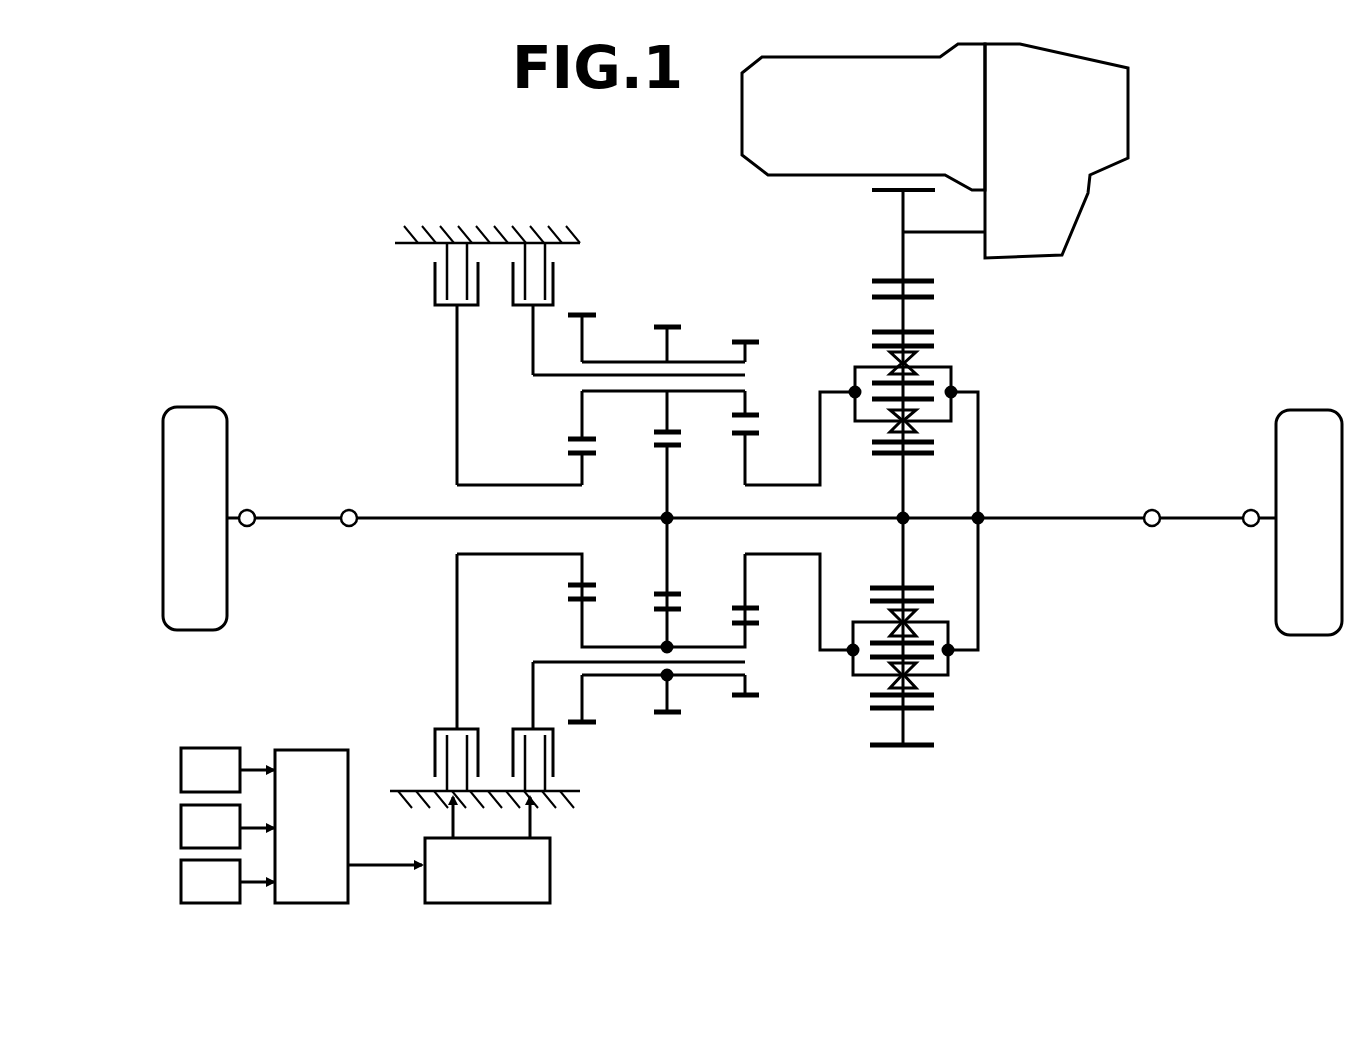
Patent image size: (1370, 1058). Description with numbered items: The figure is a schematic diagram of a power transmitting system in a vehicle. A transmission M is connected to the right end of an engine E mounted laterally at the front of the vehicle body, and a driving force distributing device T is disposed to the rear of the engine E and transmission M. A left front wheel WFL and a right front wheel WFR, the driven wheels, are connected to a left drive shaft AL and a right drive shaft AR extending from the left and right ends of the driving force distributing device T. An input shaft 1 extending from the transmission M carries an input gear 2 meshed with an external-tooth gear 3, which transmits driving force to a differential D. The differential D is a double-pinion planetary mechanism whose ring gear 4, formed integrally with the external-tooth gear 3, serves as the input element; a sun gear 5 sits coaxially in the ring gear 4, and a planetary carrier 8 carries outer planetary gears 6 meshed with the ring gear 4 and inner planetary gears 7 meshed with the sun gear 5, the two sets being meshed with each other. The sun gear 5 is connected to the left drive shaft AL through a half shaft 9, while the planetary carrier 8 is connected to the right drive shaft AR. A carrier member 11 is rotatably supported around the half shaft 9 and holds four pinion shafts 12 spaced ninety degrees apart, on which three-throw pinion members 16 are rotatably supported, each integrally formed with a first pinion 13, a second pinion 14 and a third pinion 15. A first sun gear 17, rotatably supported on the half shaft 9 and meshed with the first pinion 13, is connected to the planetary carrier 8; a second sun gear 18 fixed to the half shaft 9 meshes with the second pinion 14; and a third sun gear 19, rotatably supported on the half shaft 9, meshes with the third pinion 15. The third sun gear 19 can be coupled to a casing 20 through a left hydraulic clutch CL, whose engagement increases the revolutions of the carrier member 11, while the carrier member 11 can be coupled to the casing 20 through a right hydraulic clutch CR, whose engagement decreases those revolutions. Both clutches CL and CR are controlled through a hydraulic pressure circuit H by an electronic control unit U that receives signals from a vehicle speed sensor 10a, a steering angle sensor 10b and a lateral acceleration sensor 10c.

The input shaft 1 is at (930, 236).
The input gear 2 is at (896, 193).
The external-tooth gear 3 is at (934, 297).
The ring gear 4 is at (934, 332).
The sun gear 5 is at (934, 453).
The outer planetary gears 6 is at (872, 346).
The inner planetary gears 7 is at (872, 443).
The planetary carrier 8 is at (820, 578).
The half shaft 9 is at (610, 520).
The vehicle speed sensor 10a is at (236, 787).
The steering angle sensor 10b is at (236, 844).
The lateral acceleration sensor 10c is at (236, 899).
The carrier member 11 is at (530, 683).
The pinion shafts 12 is at (745, 376).
The first pinion 13 is at (750, 341).
The second pinion 14 is at (672, 326).
The third pinion 15 is at (585, 313).
The three-throw pinion members 16 is at (634, 342).
The first sun gear 17 is at (758, 434).
The second sun gear 18 is at (680, 448).
The third sun gear 19 is at (596, 455).
The casing 20 is at (468, 234).
The engine E is at (875, 136).
The transmission M is at (1070, 146).
The driving force distributing device T is at (633, 256).
The differential D is at (996, 414).
The left hydraulic clutch CL is at (446, 311).
The right hydraulic clutch CR is at (525, 312).
The left front wheel WFL is at (196, 418).
The right front wheel WFR is at (1302, 428).
The left drive shaft AL is at (288, 517).
The right drive shaft AR is at (1048, 517).
The electronic control unit U is at (322, 844).
The hydraulic pressure circuit H is at (500, 887).